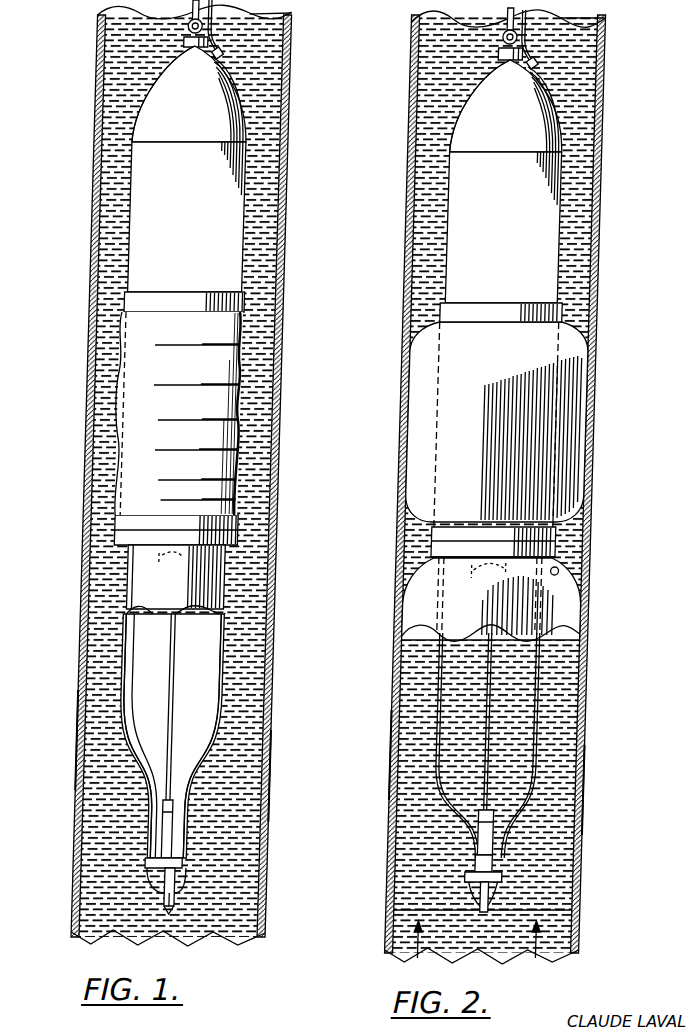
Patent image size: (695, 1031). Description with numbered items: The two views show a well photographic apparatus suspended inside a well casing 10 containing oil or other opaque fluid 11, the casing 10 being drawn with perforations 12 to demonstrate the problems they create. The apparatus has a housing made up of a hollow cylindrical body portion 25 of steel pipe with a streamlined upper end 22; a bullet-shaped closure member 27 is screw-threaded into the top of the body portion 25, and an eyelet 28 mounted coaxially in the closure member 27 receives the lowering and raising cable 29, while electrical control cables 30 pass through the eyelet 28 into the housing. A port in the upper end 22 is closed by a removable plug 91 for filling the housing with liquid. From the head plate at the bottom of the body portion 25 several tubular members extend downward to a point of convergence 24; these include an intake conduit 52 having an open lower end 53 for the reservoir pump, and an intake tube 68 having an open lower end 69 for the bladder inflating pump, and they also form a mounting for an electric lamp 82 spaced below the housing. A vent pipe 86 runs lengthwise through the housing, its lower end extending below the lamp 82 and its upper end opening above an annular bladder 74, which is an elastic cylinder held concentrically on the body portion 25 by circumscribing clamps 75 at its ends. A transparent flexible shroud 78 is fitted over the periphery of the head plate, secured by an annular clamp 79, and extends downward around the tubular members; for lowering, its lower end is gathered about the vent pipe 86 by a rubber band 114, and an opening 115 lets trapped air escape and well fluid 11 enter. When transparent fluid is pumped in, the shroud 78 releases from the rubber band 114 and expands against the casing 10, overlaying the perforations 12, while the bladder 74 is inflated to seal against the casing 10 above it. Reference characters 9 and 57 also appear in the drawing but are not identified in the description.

In FIG. 2, the flow arrows 9 is at (477, 939).
In FIG. 1, the well casing 10 is at (105, 97).
In FIG. 2, the well casing 10 is at (609, 122).
In FIG. 1, the opaque fluid 11 is at (274, 92).
In FIG. 2, the opaque fluid 11 is at (589, 143).
In FIG. 1, the perforations 12 is at (103, 782).
In FIG. 2, the perforations 12 is at (412, 800).
In FIG. 1, the streamlined upper end 22 is at (152, 73).
In FIG. 2, the streamlined upper end 22 is at (463, 88).
In FIG. 2, the point of convergence 24 is at (512, 892).
In FIG. 1, the body portion 25 is at (145, 165).
In FIG. 2, the body portion 25 is at (572, 230).
In FIG. 1, the closure member 27 is at (203, 126).
In FIG. 2, the closure member 27 is at (524, 130).
In FIG. 1, the eyelet 28 is at (193, 47).
In FIG. 2, the eyelet 28 is at (508, 61).
In FIG. 1, the lowering and raising cable 29 is at (140, 12).
In FIG. 2, the lowering and raising cable 29 is at (455, 16).
In FIG. 1, the electrical control cables 30 is at (265, 7).
In FIG. 2, the electrical control cables 30 is at (548, 12).
In FIG. 1, the intake conduit 52 is at (154, 632).
In FIG. 2, the intake conduit 52 is at (459, 580).
In FIG. 1, the open lower end 53 is at (170, 880).
In FIG. 2, the open lower end 53 is at (490, 900).
In FIG. 1, the valve 57 is at (197, 558).
In FIG. 2, the valve 57 is at (520, 566).
In FIG. 1, the intake tube 68 is at (240, 622).
In FIG. 2, the intake tube 68 is at (566, 645).
In FIG. 1, the open lower end 69 is at (210, 887).
In FIG. 2, the open lower end 69 is at (530, 900).
In FIG. 1, the annular bladder 74 is at (194, 381).
In FIG. 2, the annular bladder 74 is at (589, 327).
In FIG. 1, the circumscribing clamps 75 is at (176, 300).
In FIG. 2, the circumscribing clamps 75 is at (500, 311).
In FIG. 1, the shroud 78 is at (258, 652).
In FIG. 2, the shroud 78 is at (598, 577).
In FIG. 1, the annular clamp 79 is at (162, 546).
In FIG. 2, the annular clamp 79 is at (477, 548).
In FIG. 1, the electric lamp 82 is at (196, 812).
In FIG. 2, the electric lamp 82 is at (517, 816).
In FIG. 1, the vent pipe 86 is at (192, 682).
In FIG. 2, the vent pipe 86 is at (512, 708).
In FIG. 1, the removable plug 91 is at (216, 62).
In FIG. 2, the removable plug 91 is at (540, 66).
In FIG. 1, the rubber band 114 is at (200, 896).
In FIG. 2, the opening 115 is at (575, 569).